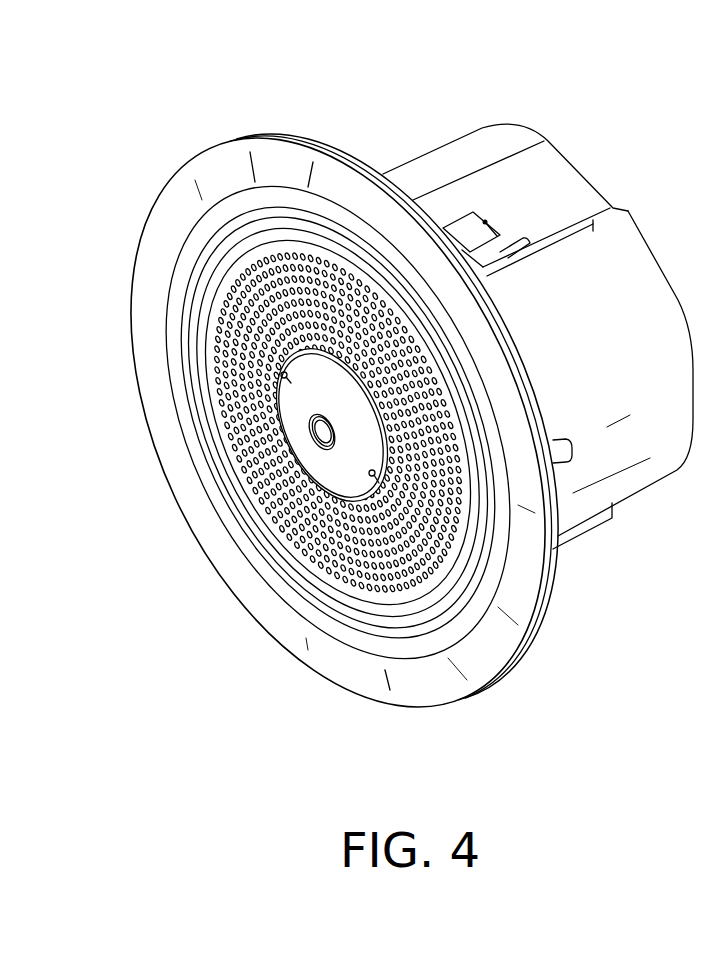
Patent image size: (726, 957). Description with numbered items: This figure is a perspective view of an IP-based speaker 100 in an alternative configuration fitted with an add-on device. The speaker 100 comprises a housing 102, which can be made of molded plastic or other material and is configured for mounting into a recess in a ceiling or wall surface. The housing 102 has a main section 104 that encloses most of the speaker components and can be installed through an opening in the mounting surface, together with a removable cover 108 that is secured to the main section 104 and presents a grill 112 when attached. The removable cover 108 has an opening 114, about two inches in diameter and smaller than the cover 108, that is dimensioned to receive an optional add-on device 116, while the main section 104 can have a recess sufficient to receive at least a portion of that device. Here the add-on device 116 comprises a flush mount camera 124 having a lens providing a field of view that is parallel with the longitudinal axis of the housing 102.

The IP-based speaker 100 is at (256, 662).
The housing 102 is at (452, 152).
The main section 104 is at (615, 287).
The removable cover 108 is at (160, 235).
The grill 112 is at (284, 520).
The opening 114 is at (343, 497).
The add-on device 116 is at (292, 406).
The flush mount camera 124 is at (314, 434).